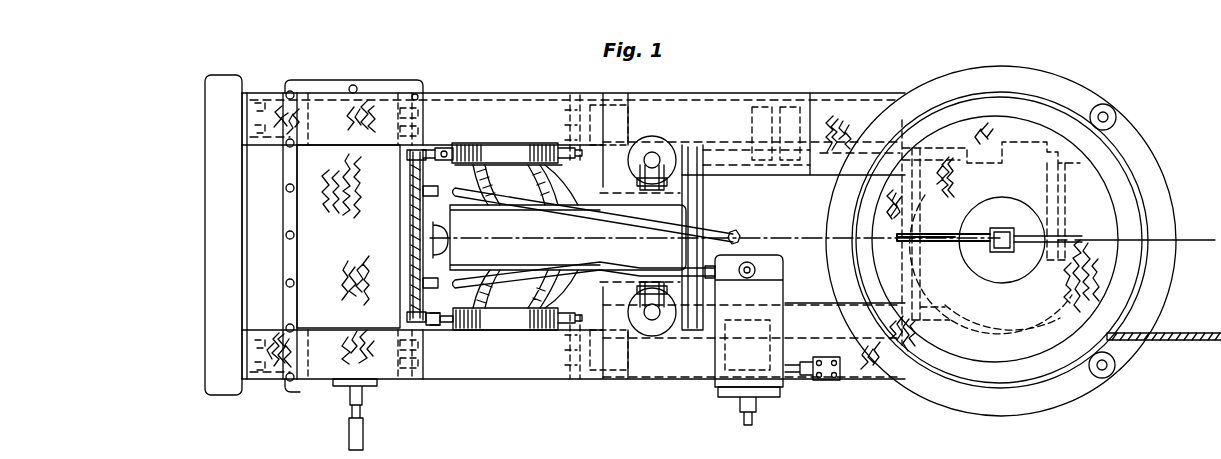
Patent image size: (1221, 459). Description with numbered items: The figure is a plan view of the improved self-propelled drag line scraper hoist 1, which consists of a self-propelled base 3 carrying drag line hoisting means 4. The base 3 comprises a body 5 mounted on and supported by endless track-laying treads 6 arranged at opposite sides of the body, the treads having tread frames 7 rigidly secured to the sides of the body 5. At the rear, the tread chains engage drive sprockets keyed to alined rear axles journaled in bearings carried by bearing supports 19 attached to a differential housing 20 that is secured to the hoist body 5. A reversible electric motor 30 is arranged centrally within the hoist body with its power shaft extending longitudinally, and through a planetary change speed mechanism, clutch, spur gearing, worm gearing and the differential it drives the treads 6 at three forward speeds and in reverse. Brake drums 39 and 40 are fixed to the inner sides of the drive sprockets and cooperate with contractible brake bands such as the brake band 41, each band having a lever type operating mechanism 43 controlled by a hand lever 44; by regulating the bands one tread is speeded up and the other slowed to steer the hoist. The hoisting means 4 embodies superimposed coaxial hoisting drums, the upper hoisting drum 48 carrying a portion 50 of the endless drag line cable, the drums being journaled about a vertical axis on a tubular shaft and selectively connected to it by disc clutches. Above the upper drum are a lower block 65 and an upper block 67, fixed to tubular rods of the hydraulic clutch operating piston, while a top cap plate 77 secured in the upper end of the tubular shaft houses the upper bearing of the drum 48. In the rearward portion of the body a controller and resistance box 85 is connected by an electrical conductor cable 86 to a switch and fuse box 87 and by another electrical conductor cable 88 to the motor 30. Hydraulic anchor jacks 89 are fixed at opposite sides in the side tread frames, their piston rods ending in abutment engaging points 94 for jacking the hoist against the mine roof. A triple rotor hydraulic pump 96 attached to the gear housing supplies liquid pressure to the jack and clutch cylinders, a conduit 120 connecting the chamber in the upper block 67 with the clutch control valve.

The drag line scraper hoist 1 is at (765, 88).
The self-propelled base 3 is at (431, 230).
The drag line hoisting means 4 is at (1015, 89).
The body 5 is at (265, 376).
The endless track-laying treads 6 is at (718, 113).
The tread frames 7 is at (783, 108).
The bearing supports 19 is at (543, 207).
The differential housing 20 is at (485, 220).
The motor 30 is at (800, 285).
The brake drum 39 is at (443, 147).
The brake drum 40 is at (545, 308).
The brake band 41 is at (490, 152).
The lever type operating mechanism 43 is at (478, 320).
The hand lever 44 is at (438, 322).
The hoisting drum 48 is at (1058, 117).
The drag line cable portion 50 is at (1203, 341).
The block 65 is at (1013, 238).
The upper block 67 is at (1005, 234).
The top cap plate 77 is at (1038, 240).
The controller and resistance box 85 is at (330, 310).
The electrical conductor cable 86 is at (556, 275).
The switch and fuse box 87 is at (725, 362).
The electrical conductor cable 88 is at (557, 205).
The hydraulic anchor jacks 89 is at (668, 150).
The abutment engaging points 94 is at (652, 160).
The hydraulic pump 96 is at (1112, 112).
The conduit 120 is at (937, 232).